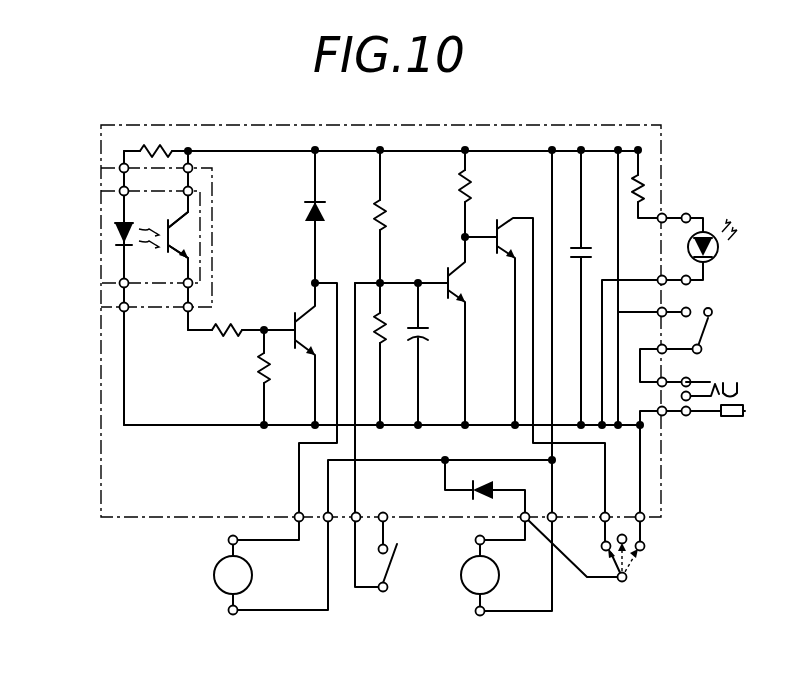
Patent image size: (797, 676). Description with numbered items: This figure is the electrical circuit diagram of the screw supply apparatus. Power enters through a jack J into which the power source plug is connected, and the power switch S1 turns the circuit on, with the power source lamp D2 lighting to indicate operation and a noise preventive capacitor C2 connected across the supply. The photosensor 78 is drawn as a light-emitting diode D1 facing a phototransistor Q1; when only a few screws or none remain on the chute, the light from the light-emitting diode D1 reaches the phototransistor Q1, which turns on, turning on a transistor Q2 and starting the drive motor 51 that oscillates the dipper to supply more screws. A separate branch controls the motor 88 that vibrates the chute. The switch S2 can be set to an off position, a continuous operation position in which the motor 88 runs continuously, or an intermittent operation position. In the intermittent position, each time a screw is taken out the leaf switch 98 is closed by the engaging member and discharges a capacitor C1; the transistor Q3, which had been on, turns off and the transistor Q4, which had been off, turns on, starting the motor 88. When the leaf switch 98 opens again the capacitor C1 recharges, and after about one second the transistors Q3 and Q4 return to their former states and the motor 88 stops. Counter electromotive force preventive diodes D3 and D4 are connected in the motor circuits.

The photosensor 78 is at (149, 288).
The light-emitting diode D1 is at (117, 238).
The phototransistor Q1 is at (187, 232).
The transistor Q2 is at (297, 346).
The transistor Q3 is at (446, 279).
The transistor Q4 is at (494, 229).
The power source lamp D2 is at (712, 263).
The counter electromotive force preventive diode D3 is at (318, 206).
The counter electromotive force preventive diode D4 is at (470, 499).
The capacitor C1 is at (423, 342).
The noise preventive capacitor C2 is at (586, 256).
The power switch S1 is at (703, 333).
The switch S2 is at (626, 572).
The jack J is at (743, 412).
The drive motor 51 is at (214, 574).
The motor 88 is at (470, 592).
The leaf switch 98 is at (392, 560).